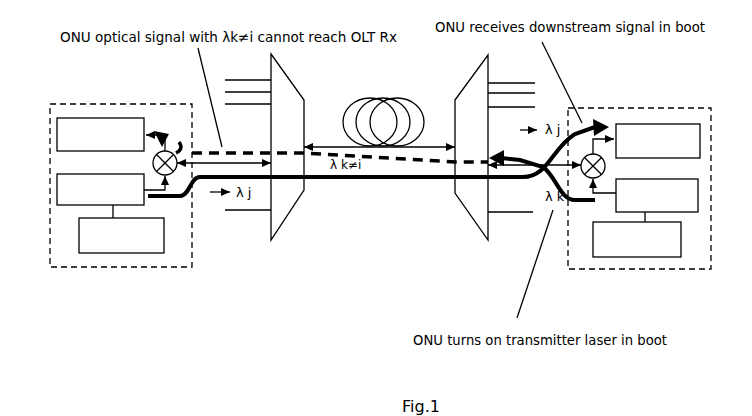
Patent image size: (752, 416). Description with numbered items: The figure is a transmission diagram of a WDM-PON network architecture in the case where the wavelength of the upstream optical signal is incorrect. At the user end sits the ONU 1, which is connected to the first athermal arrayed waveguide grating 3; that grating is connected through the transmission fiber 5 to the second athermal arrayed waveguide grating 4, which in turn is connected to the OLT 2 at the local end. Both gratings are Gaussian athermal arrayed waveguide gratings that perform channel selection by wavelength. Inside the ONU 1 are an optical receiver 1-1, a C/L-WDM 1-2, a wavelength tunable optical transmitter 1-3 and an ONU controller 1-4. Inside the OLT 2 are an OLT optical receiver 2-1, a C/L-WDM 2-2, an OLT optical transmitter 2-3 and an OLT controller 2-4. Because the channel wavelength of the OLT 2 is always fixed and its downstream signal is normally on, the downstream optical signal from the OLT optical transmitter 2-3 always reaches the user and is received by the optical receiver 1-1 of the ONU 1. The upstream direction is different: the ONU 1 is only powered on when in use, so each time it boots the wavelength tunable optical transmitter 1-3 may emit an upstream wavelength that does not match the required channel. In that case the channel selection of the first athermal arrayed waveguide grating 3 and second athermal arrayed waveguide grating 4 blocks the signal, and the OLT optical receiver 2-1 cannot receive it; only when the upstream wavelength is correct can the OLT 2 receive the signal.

The ONU 1 is at (681, 115).
The optical receiver 1-1 is at (587, 150).
The C/L-WDM 1-2 is at (658, 141).
The wavelength tunable optical transmitter 1-3 is at (657, 195).
The ONU controller 1-4 is at (637, 239).
The OLT 2 is at (65, 110).
The OLT optical receiver 2-1 is at (172, 170).
The C/L-WDM 2-2 is at (100, 134).
The OLT optical transmitter 2-3 is at (100, 189).
The OLT controller 2-4 is at (121, 235).
The first athermal arrayed waveguide grating 3 is at (495, 147).
The second athermal arrayed waveguide grating 4 is at (264, 147).
The transmission fiber 5 is at (383, 122).